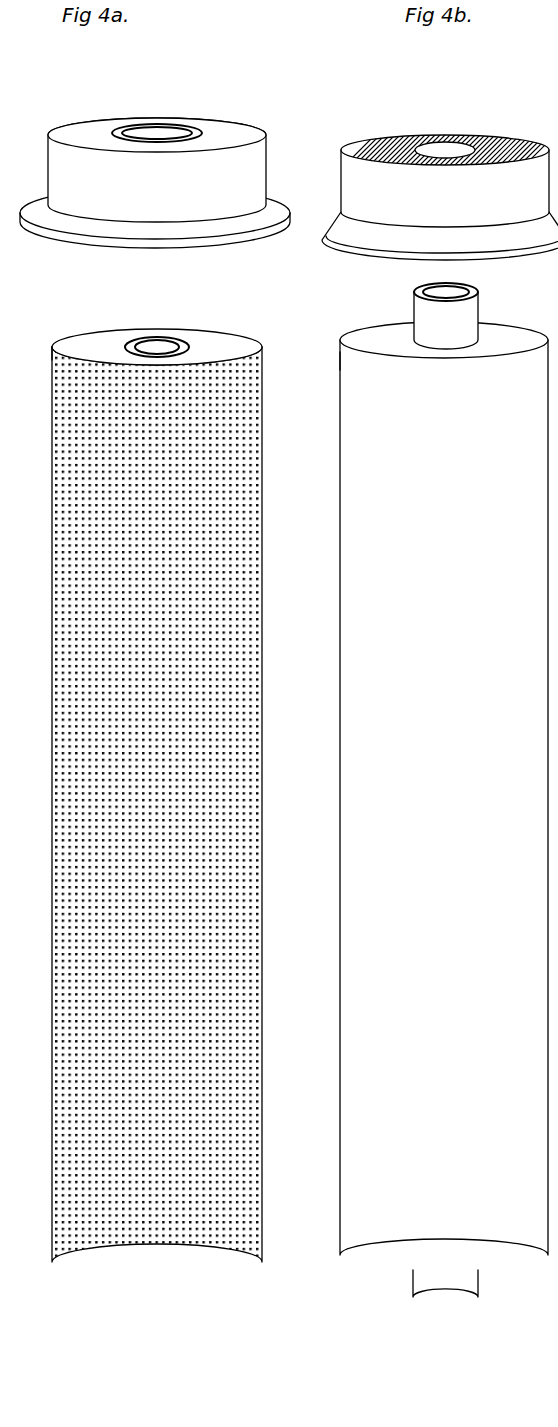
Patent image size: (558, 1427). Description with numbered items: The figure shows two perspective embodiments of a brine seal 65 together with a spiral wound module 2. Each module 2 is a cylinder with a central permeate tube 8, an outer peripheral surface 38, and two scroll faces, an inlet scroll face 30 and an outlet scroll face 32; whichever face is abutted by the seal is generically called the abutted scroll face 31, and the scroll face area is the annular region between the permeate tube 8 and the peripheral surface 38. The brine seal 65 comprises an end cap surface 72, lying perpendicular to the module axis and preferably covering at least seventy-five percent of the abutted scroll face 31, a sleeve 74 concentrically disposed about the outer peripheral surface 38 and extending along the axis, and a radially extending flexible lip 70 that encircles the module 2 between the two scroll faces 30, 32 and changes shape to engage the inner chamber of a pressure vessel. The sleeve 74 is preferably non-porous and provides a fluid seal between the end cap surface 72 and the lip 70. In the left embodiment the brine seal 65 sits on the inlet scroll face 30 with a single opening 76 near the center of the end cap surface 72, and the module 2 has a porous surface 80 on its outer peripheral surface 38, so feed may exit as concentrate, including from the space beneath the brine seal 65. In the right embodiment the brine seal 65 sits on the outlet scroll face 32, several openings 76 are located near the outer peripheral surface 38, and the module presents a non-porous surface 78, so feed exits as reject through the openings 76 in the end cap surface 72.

In FIG. 4A, the module 2 is at (176, 760).
In FIG. 4B, the module 2 is at (413, 777).
In FIG. 4A, the permeate tube 8 is at (188, 342).
In FIG. 4B, the permeate tube 8 is at (478, 306).
In FIG. 4A, the inlet scroll face 30 is at (228, 347).
In FIG. 4A, the abutted scroll face 31 is at (243, 352).
In FIG. 4B, the abutted scroll face 31 is at (505, 330).
In FIG. 4B, the outlet scroll face 32 is at (398, 338).
In FIG. 4A, the outer peripheral surface 38 is at (189, 804).
In FIG. 4B, the outer peripheral surface 38 is at (385, 675).
In FIG. 4A, the brine seal 65 is at (181, 129).
In FIG. 4A, the radially extending flexible lip 70 is at (282, 200).
In FIG. 4A, the end cap surface 72 is at (88, 127).
In FIG. 4B, the end cap surface 72 is at (402, 148).
In FIG. 4A, the sleeve 74 is at (268, 140).
In FIG. 4B, the sleeve 74 is at (440, 205).
In FIG. 4A, the opening 76 is at (172, 128).
In FIG. 4B, the opening 76 is at (500, 140).
In FIG. 4B, the non-porous surface 78 is at (338, 716).
In FIG. 4A, the porous surface 80 is at (262, 926).